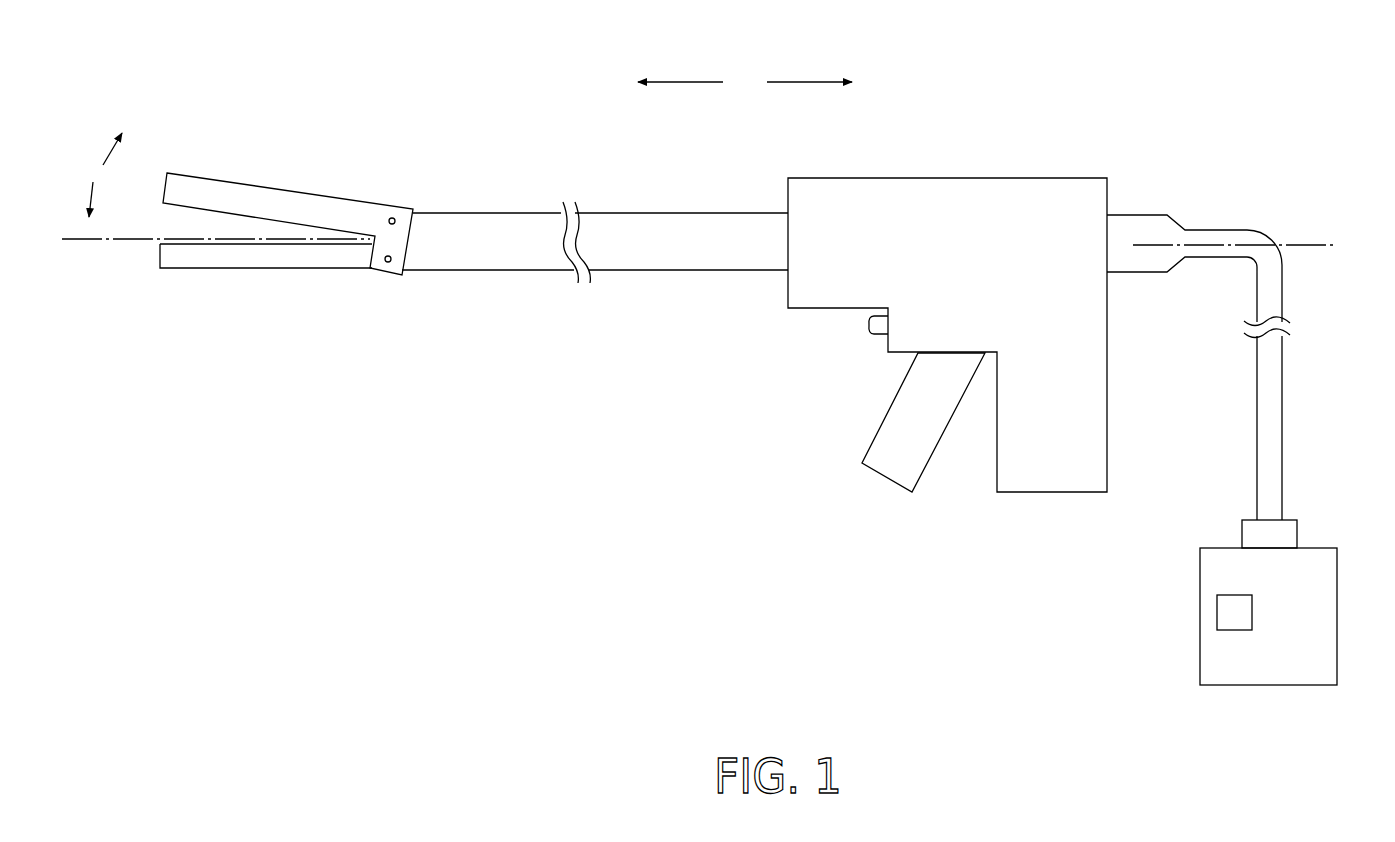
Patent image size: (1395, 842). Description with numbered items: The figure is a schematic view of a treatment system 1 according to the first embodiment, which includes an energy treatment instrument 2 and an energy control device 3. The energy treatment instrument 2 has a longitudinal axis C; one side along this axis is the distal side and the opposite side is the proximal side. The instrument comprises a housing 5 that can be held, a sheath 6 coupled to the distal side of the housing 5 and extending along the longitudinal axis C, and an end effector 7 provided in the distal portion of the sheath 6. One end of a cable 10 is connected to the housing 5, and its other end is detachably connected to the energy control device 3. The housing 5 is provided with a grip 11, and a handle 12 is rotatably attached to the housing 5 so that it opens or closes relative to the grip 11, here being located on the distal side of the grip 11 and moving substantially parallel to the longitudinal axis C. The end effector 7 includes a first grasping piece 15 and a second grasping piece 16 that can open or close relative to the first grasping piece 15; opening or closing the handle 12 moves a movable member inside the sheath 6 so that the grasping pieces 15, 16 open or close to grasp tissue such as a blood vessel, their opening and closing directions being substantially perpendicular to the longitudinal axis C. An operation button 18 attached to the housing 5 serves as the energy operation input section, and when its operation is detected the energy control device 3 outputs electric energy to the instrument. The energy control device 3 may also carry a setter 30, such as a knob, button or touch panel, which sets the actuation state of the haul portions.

The treatment system 1 is at (1146, 57).
The energy treatment instrument 2 is at (986, 288).
The energy control device 3 is at (1262, 602).
The housing 5 is at (976, 194).
The sheath 6 is at (678, 230).
The end effector 7 is at (286, 283).
The cable 10 is at (1223, 237).
The grip 11 is at (1094, 404).
The handle 12 is at (915, 450).
The first grasping piece 15 is at (235, 264).
The second grasping piece 16 is at (277, 216).
The operation button 18 is at (872, 335).
The setter 30 is at (1228, 613).
The longitudinal axis C is at (103, 243).